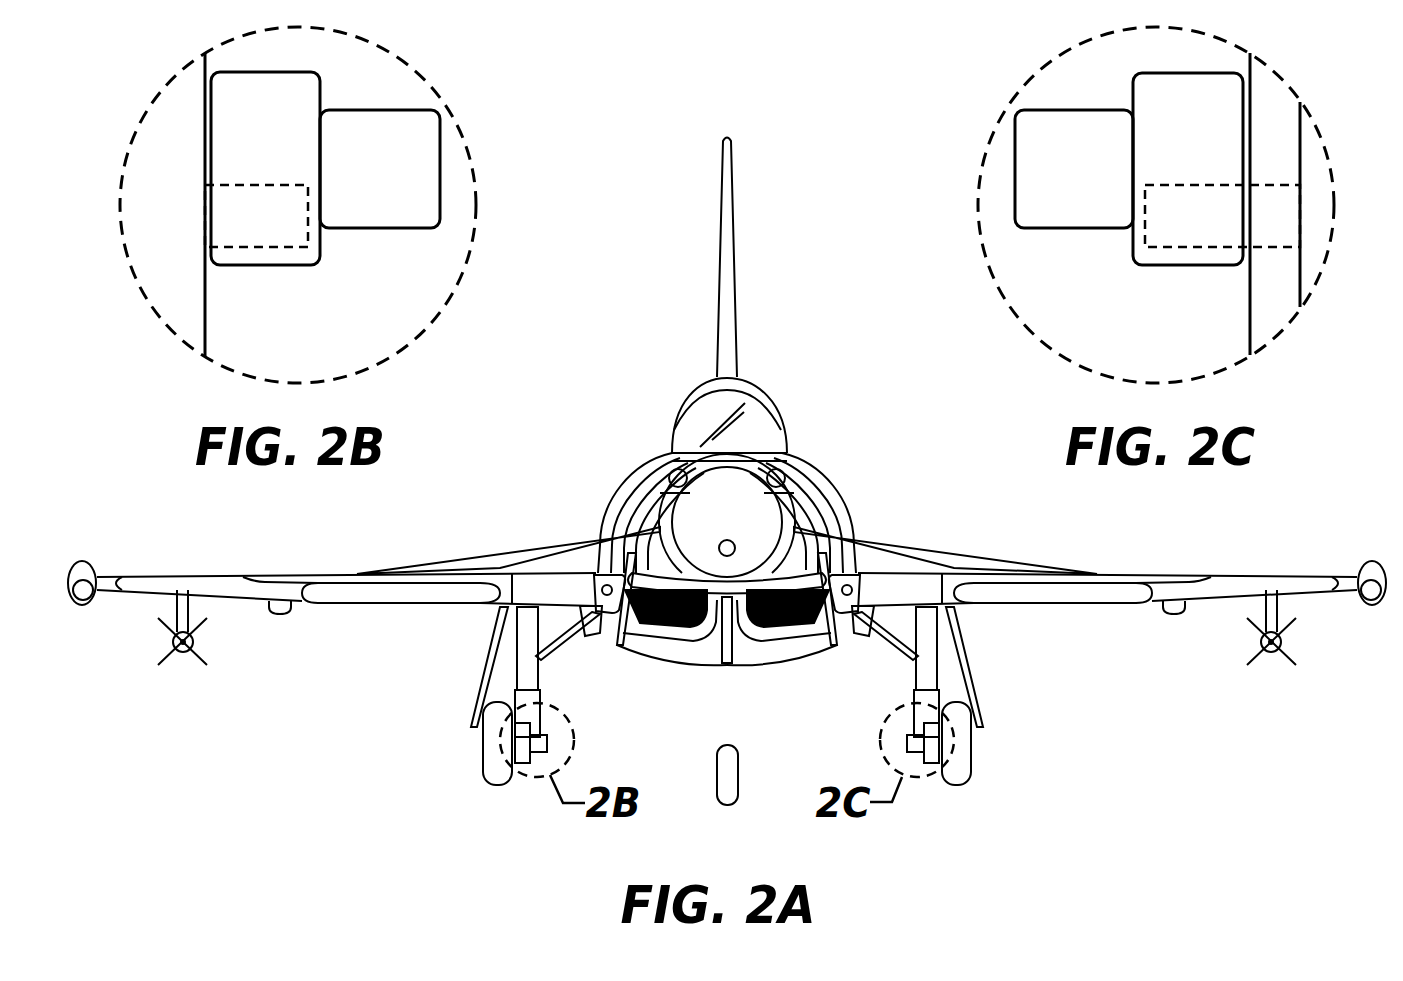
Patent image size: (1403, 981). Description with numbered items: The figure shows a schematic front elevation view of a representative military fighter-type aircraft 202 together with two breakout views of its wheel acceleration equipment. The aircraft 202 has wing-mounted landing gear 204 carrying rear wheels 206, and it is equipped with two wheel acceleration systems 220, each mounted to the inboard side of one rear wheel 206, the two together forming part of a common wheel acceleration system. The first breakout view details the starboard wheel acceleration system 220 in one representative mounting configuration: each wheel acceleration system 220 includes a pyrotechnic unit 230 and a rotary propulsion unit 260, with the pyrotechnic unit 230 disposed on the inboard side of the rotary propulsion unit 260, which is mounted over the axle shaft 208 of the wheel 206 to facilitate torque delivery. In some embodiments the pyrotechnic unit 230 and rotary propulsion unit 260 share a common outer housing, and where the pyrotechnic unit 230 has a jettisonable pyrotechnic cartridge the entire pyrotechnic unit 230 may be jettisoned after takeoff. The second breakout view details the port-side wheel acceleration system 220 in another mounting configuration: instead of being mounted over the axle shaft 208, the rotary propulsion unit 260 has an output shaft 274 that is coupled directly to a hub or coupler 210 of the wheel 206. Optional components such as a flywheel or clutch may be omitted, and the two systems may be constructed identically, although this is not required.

In FIG. 2A, the aircraft 202 is at (631, 373).
In FIG. 2A, the landing gear 204 is at (535, 667).
In FIG. 2A, the rear wheel 206 is at (488, 782).
In FIG. 2B, the rear wheel 206 is at (148, 218).
In FIG. 2C, the rear wheel 206 is at (1258, 153).
In FIG. 2B, the axle shaft 208 is at (255, 249).
In FIG. 2C, the hub or coupler 210 is at (1302, 170).
In FIG. 2A, the wheel acceleration system 220 is at (530, 778).
In FIG. 2B, the wheel acceleration system 220 is at (440, 95).
In FIG. 2C, the wheel acceleration system 220 is at (1020, 88).
In FIG. 2B, the pyrotechnic unit 230 is at (361, 193).
In FIG. 2C, the pyrotechnic unit 230 is at (1056, 193).
In FIG. 2B, the rotary propulsion unit 260 is at (247, 131).
In FIG. 2C, the rotary propulsion unit 260 is at (1169, 131).
In FIG. 2C, the output shaft 274 is at (1198, 249).